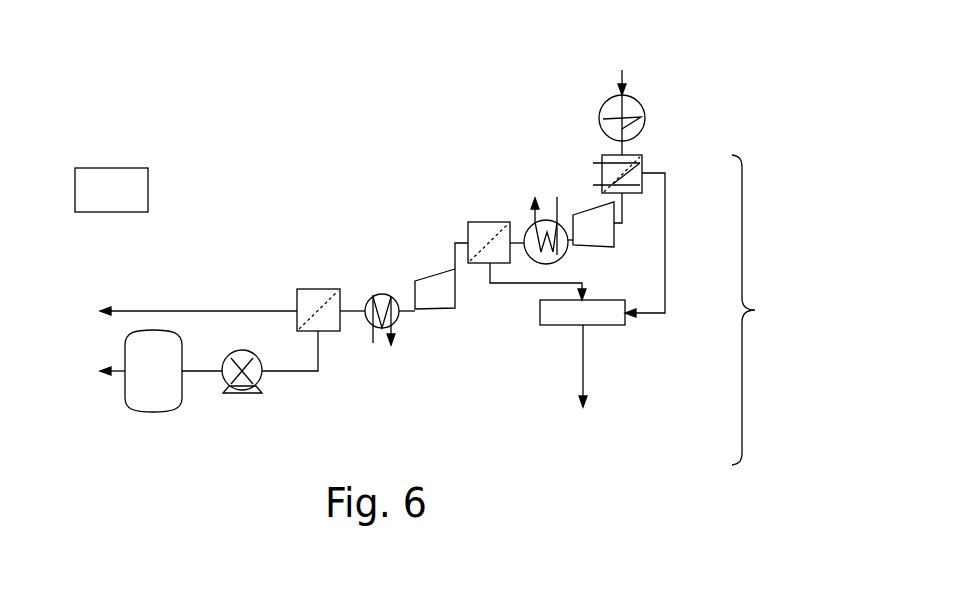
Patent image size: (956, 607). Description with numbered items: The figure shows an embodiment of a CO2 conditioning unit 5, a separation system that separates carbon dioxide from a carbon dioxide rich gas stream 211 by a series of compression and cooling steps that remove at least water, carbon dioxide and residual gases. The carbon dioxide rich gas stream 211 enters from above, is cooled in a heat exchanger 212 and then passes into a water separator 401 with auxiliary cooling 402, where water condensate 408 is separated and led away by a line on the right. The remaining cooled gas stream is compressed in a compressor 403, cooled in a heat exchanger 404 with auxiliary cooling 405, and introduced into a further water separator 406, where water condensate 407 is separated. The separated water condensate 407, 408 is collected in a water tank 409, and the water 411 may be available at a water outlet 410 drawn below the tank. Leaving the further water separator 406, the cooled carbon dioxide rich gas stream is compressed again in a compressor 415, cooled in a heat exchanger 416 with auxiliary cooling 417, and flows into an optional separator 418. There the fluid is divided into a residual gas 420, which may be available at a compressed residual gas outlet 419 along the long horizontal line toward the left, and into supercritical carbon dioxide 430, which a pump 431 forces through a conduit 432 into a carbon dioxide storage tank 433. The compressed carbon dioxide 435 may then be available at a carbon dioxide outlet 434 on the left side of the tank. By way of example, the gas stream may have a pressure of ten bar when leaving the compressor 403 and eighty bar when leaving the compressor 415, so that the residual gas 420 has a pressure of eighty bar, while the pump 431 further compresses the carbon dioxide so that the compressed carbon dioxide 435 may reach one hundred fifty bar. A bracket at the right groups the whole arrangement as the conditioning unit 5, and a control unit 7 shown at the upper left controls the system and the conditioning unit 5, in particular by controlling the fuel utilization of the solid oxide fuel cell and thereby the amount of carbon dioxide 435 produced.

The conditioning unit 5 is at (751, 310).
The control unit 7 is at (111, 190).
The carbon dioxide rich gas stream 211 is at (621, 82).
The heat exchanger 212 is at (631, 101).
The water separator 401 is at (609, 157).
The auxiliary cooling 402 is at (601, 163).
The compressor 403 is at (605, 241).
The heat exchanger 404 is at (560, 248).
The auxiliary cooling 405 is at (534, 210).
The further water separator 406 is at (488, 225).
The water condensate 407 is at (517, 284).
The water condensate 408 is at (666, 230).
The water tank 409 is at (561, 318).
The water outlet 410 is at (584, 365).
The water 411 is at (586, 405).
The compressor 415 is at (443, 298).
The heat exchanger 416 is at (381, 294).
The auxiliary cooling 417 is at (390, 350).
The separator 418 is at (317, 291).
The compressed residual gas outlet 419 is at (226, 311).
The residual gas 420 is at (100, 311).
The supercritical carbon dioxide 430 is at (305, 373).
The pump 431 is at (243, 394).
The conduit 432 is at (196, 373).
The carbon dioxide storage tank 433 is at (157, 405).
The carbon dioxide outlet 434 is at (120, 373).
The compressed carbon dioxide 435 is at (100, 371).